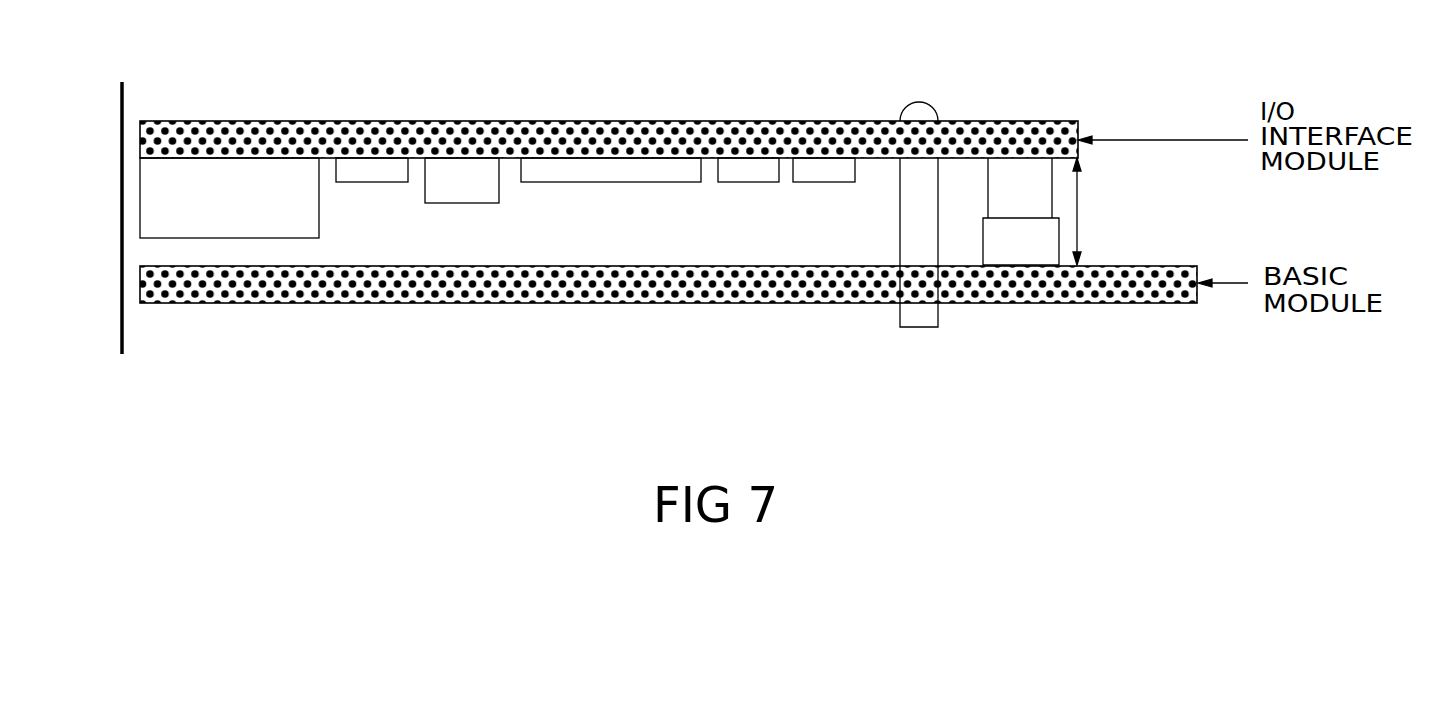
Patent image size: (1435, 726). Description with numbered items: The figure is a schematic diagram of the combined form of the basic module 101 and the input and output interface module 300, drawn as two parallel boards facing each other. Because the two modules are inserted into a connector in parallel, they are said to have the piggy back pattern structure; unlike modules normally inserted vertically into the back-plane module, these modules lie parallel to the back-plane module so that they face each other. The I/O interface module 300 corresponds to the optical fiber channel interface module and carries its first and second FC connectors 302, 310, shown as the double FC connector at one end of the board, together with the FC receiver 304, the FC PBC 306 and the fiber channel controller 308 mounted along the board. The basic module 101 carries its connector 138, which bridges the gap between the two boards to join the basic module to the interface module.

The input and output interface module 300 is at (688, 121).
The basic module 101 is at (562, 303).
The first FC connector 302 is at (298, 198).
The second FC connector 310 is at (323, 225).
The FC receiver 304 is at (368, 163).
The FC PBC 306 is at (458, 163).
The fiber channel controller 308 is at (592, 163).
The connector 138 is at (1032, 250).